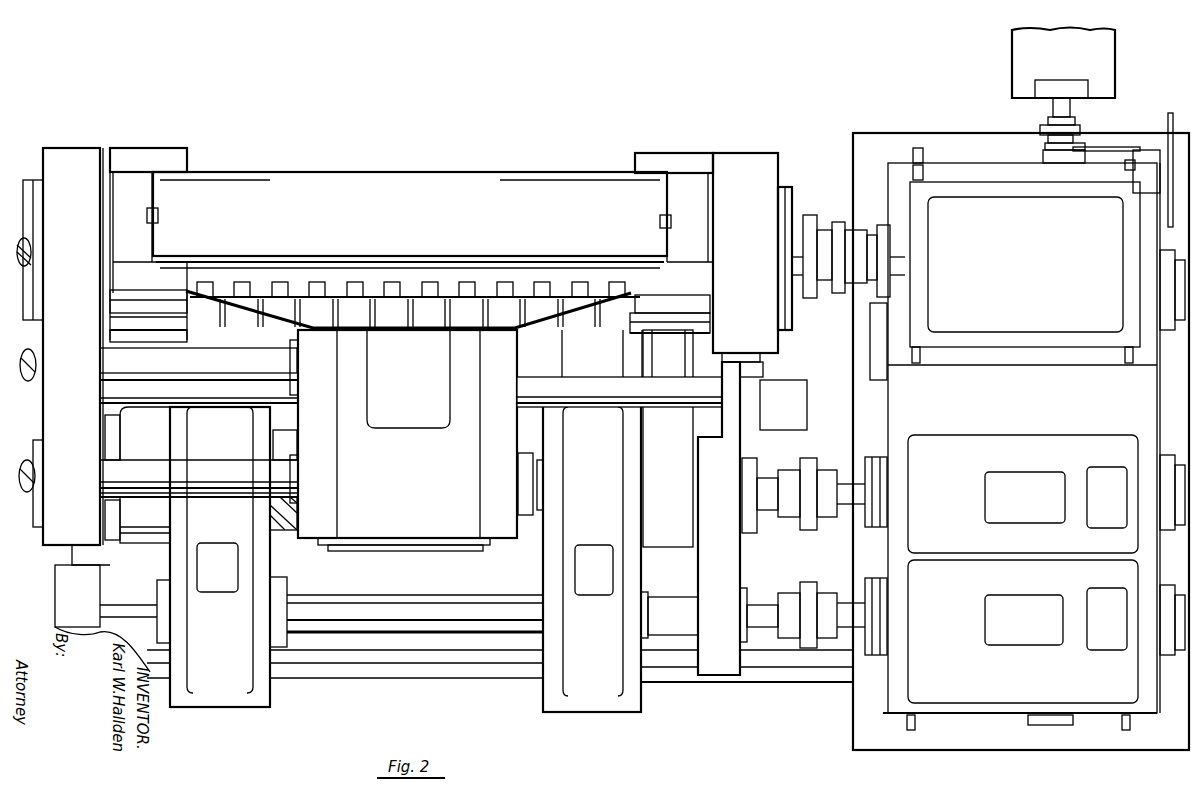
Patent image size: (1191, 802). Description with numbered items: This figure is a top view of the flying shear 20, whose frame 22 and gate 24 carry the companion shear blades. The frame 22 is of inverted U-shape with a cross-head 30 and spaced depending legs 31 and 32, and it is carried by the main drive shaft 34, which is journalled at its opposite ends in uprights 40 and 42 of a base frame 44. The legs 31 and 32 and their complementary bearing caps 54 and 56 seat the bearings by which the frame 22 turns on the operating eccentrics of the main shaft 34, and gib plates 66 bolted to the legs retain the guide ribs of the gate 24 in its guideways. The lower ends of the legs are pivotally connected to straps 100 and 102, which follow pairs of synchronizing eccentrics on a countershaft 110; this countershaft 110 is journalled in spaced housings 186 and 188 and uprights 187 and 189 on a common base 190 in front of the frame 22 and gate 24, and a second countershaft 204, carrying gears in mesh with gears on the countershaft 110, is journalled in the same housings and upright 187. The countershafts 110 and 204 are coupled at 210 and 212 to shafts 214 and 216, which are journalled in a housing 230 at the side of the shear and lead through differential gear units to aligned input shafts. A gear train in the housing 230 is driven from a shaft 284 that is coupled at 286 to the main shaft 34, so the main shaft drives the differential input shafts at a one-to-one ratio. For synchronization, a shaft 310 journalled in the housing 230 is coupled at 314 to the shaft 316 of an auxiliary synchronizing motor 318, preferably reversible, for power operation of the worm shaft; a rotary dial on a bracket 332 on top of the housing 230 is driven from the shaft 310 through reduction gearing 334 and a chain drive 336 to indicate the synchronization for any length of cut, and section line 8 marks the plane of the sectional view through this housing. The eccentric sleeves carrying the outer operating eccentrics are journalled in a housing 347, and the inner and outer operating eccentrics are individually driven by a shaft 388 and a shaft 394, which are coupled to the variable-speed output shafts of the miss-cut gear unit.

The section line 8- 8 is at (1088, 138).
The shear 20 is at (592, 161).
The frame 22 is at (242, 170).
The gate 24 is at (424, 329).
The cross-head 30 is at (400, 195).
The leg 31 is at (680, 166).
The leg 32 is at (142, 158).
The main drive shaft 34 is at (795, 250).
The upright 40 is at (748, 166).
The upright 42 is at (68, 160).
The base frame 44 is at (730, 153).
The bearing cap 54 is at (667, 420).
The bearing cap 56 is at (170, 330).
The gib plate 66 is at (127, 297).
The strap 100 is at (670, 408).
The strap 102 is at (142, 415).
The countershaft 110 is at (765, 483).
The housing 186 is at (628, 574).
The upright 187 is at (708, 572).
The housing 188 is at (265, 567).
The upright 189 is at (103, 556).
The base 190 is at (458, 640).
The countershaft 204 is at (385, 605).
The coupling 210 is at (813, 460).
The coupling 212 is at (808, 582).
The shaft 214 is at (855, 483).
The shaft 216 is at (852, 613).
The housing 230 is at (945, 715).
The shaft 284 is at (872, 250).
The coupling 286 is at (822, 225).
The shaft 310 is at (1045, 144).
The coupling 314 is at (1045, 125).
The motor shaft 316 is at (1071, 106).
The auxiliary synchronizing motor 318 is at (1103, 67).
The bracket 332 is at (1168, 140).
The reduction gearing 334 is at (1133, 155).
The chain drive 336 is at (1125, 147).
The housing 347 is at (448, 512).
The shaft 388 is at (233, 371).
The shaft 394 is at (223, 480).